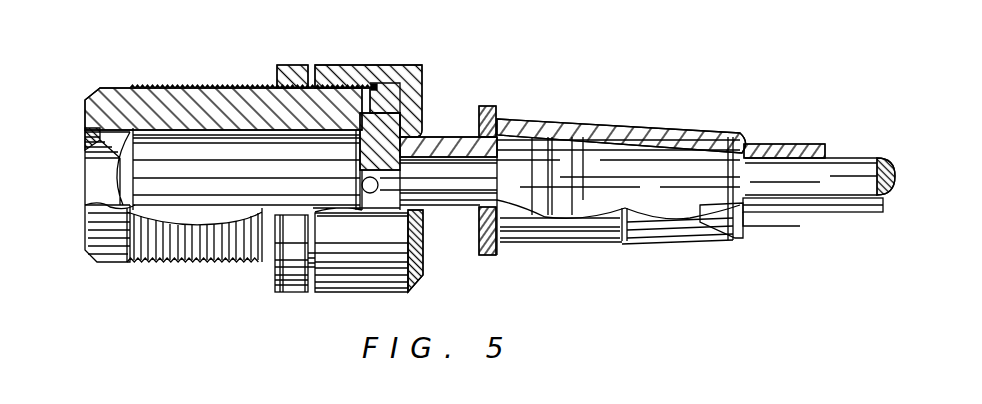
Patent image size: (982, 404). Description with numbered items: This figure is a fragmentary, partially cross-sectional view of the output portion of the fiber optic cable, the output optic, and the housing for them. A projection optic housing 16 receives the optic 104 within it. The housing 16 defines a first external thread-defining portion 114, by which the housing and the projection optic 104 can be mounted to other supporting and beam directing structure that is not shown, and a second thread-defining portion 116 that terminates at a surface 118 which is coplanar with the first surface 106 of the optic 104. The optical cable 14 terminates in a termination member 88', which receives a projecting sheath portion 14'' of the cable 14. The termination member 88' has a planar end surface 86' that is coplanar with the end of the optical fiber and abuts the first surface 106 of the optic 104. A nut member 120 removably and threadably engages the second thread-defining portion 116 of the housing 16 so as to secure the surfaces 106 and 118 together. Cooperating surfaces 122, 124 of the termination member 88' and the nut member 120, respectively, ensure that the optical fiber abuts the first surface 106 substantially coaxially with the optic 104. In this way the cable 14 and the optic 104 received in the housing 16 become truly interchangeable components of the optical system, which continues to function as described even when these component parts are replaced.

The optical cable 14 is at (820, 155).
The projecting sheath portion 14'' is at (438, 189).
The projection optic housing 16 is at (284, 293).
The planar end surface 86' is at (341, 170).
The termination member 88' is at (690, 170).
The optic 104 is at (198, 143).
The first surface 106 is at (371, 205).
The first external thread-defining portion 114 is at (133, 90).
The second thread-defining portion 116 is at (326, 102).
The surface 118 is at (382, 85).
The nut member 120 is at (387, 293).
The cooperating surface 122 is at (486, 103).
The cooperating surface 124 is at (418, 140).